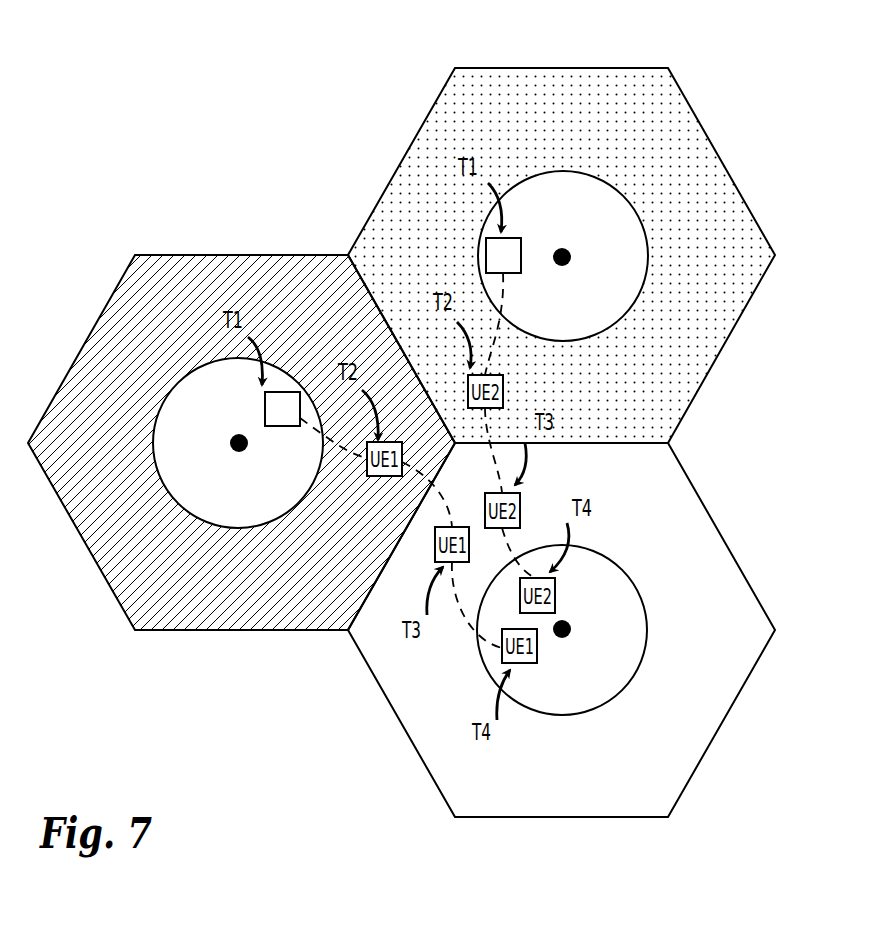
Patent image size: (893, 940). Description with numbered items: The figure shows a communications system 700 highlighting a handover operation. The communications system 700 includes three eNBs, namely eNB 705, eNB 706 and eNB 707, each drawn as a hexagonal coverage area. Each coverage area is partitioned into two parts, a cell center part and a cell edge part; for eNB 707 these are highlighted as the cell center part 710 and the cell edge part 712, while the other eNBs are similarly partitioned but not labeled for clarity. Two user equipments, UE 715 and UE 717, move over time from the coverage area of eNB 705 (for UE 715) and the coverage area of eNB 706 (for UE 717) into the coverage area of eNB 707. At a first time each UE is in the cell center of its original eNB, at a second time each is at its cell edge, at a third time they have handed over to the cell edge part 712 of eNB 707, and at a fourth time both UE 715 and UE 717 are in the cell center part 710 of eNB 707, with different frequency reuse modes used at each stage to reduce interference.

The communications system 700 is at (126, 40).
The eNB 705 is at (239, 450).
The eNB 706 is at (565, 263).
The eNB 707 is at (563, 638).
The cell center part 710 is at (605, 580).
The cell edge part 712 is at (715, 560).
The UE 715 is at (265, 408).
The UE 717 is at (521, 255).